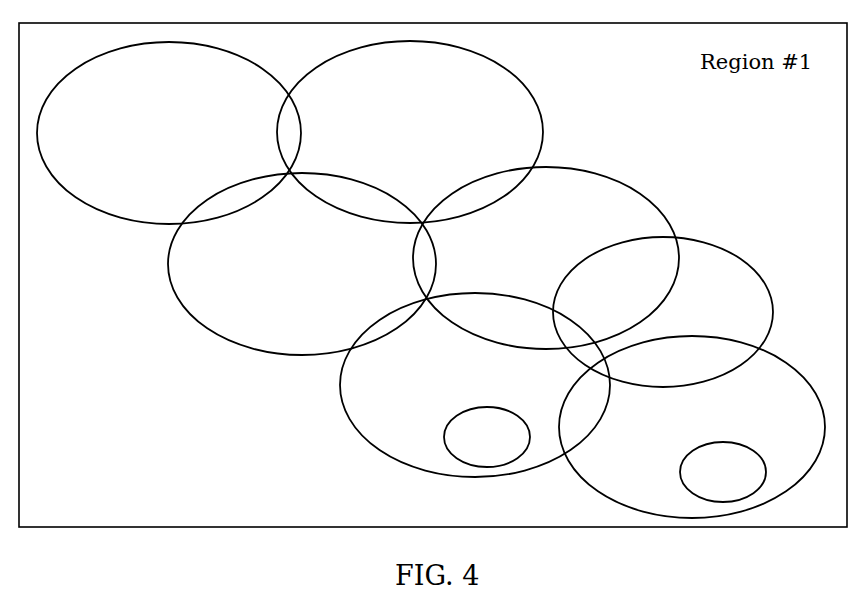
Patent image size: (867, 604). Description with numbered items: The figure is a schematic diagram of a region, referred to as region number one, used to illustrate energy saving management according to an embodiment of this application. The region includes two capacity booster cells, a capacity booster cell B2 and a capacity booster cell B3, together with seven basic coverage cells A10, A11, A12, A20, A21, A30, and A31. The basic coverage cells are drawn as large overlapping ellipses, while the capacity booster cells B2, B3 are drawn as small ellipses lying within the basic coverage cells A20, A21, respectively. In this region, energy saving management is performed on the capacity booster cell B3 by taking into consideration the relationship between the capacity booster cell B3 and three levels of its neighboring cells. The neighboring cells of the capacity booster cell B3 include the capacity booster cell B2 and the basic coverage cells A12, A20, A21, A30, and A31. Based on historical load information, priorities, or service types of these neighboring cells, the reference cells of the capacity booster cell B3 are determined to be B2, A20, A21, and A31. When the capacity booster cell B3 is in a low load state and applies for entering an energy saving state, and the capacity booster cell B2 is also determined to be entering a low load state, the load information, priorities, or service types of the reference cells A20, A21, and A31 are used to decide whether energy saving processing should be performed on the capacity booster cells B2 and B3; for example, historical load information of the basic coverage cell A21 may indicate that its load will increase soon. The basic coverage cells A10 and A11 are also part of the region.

The basic coverage cell A10 is at (169, 133).
The basic coverage cell A11 is at (410, 132).
The basic coverage cell A12 is at (302, 264).
The basic coverage cell A30 is at (546, 258).
The basic coverage cell A31 is at (663, 312).
The basic coverage cell A20 is at (475, 385).
The basic coverage cell A21 is at (692, 427).
The capacity booster cell B2 is at (487, 437).
The capacity booster cell B3 is at (723, 472).